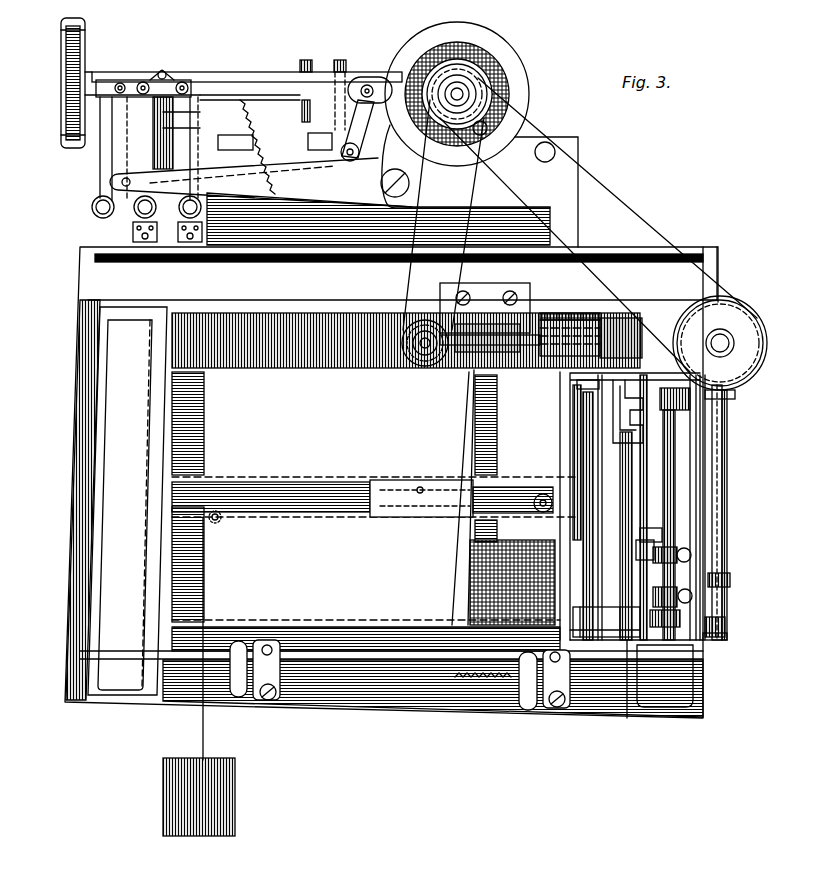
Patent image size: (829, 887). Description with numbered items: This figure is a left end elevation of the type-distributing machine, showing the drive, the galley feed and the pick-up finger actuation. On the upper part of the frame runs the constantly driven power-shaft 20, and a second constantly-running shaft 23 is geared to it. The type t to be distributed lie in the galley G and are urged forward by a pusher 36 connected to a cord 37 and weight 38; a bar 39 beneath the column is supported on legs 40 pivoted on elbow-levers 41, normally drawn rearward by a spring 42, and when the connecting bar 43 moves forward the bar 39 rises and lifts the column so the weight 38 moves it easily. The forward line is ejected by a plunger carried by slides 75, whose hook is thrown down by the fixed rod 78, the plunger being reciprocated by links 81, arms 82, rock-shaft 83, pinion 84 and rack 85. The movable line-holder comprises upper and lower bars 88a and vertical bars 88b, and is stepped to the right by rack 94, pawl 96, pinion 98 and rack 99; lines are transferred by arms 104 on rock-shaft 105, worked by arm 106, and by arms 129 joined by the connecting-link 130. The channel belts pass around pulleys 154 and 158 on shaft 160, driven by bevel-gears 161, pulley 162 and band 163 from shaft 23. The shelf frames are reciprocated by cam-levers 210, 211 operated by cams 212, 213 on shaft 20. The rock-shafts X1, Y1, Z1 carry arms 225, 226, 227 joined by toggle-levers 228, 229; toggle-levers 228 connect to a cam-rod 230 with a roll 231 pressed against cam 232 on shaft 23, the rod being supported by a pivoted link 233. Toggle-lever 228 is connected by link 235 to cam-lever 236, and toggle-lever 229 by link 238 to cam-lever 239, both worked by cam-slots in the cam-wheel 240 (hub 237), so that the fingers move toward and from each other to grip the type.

The power-shaft 20 is at (207, 72).
The second constantly-running shaft 23 is at (470, 92).
The pusher 36 is at (467, 472).
The cord 37 is at (540, 494).
The weight 38 is at (236, 786).
The bar 39 is at (410, 630).
The legs 40 is at (238, 697).
The elbow-levers 41 is at (265, 700).
The spring 42 is at (485, 680).
The bar 43 is at (330, 651).
The slides 75 is at (578, 392).
The fixed rod 78 is at (576, 440).
The links 81 is at (582, 386).
The arms 82 is at (585, 378).
The rock-shaft 83 is at (673, 467).
The pinion 84 is at (680, 593).
The rack 85 is at (680, 615).
The upper and lower bars 88a is at (625, 415).
The vertical bars 88b is at (612, 445).
The rack 94 is at (655, 542).
The pawl 96 is at (651, 530).
The pinion 98 is at (680, 550).
The rack 99 is at (692, 555).
The arms 104 is at (728, 638).
The rock-shaft 105 is at (723, 482).
The arm 106 is at (730, 580).
The arms 129 is at (700, 643).
The connecting-link 130 is at (700, 580).
The pulley 154 is at (605, 325).
The pulley 158 is at (560, 318).
The shaft 160 is at (507, 330).
The bevel-gears 161 is at (441, 362).
The pulley 162 is at (412, 362).
The band 163 is at (410, 270).
The cam-lever 210 is at (305, 122).
The cam-lever 211 is at (324, 141).
The cam 212 is at (305, 60).
The cam 213 is at (340, 60).
The arm 225 is at (128, 135).
The arm 226 is at (142, 145).
The arm 227 is at (185, 145).
The toggle-levers 228 is at (117, 80).
The toggle-levers 229 is at (163, 72).
The cam-rod 230 is at (256, 88).
The roll 231 is at (368, 78).
The cam 232 is at (415, 45).
The pivoted link 233 is at (341, 153).
The link 235 is at (122, 120).
The cam-lever 236 is at (261, 182).
The hub 237 is at (490, 62).
The link 238 is at (170, 120).
The cam-lever 239 is at (244, 152).
The cam-wheel 240 is at (478, 45).
The galley G is at (391, 482).
The type t is at (535, 558).
The rock-shaft X1 is at (99, 208).
The rock-shaft Y1 is at (143, 210).
The rock-shaft Z1 is at (188, 212).